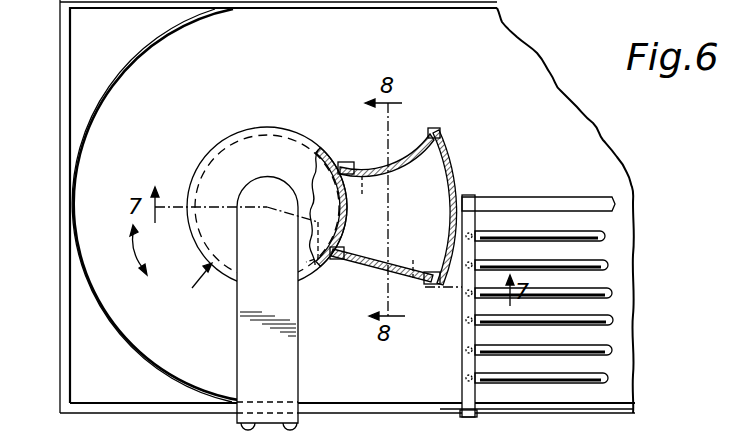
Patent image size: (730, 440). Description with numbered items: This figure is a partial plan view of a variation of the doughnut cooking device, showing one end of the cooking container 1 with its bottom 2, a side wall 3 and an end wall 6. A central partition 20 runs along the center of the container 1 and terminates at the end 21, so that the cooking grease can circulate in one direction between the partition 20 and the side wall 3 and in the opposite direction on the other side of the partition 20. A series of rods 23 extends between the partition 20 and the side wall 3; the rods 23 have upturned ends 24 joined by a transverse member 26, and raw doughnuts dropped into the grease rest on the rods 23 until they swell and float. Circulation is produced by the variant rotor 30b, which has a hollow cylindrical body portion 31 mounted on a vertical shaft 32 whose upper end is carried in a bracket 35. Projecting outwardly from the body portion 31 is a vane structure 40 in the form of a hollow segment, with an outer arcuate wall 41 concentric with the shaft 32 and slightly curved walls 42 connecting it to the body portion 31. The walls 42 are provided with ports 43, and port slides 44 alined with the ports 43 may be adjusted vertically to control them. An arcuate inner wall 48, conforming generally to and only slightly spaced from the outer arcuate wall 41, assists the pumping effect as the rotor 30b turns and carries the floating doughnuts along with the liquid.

The cooking container 1 is at (58, 97).
The bottom 2 is at (588, 142).
The side wall 3 is at (520, 408).
The end wall 6 is at (68, 283).
The central partition 20 is at (557, 204).
The end of partition 21 is at (462, 202).
The rods 23 is at (558, 268).
The upturned ends 24 is at (467, 328).
The transverse member 26 is at (463, 367).
The rotor 30b is at (183, 287).
The hollow cylindrical body portion 31 is at (200, 163).
The shaft 32 is at (257, 197).
The bracket 35 is at (300, 372).
The vane structure 40 is at (424, 208).
The outer arcuate wall 41 is at (455, 172).
The walls 42 is at (394, 173).
The ports 43 is at (383, 227).
The port slides 44 is at (367, 163).
The arcuate inner wall 48 is at (193, 366).